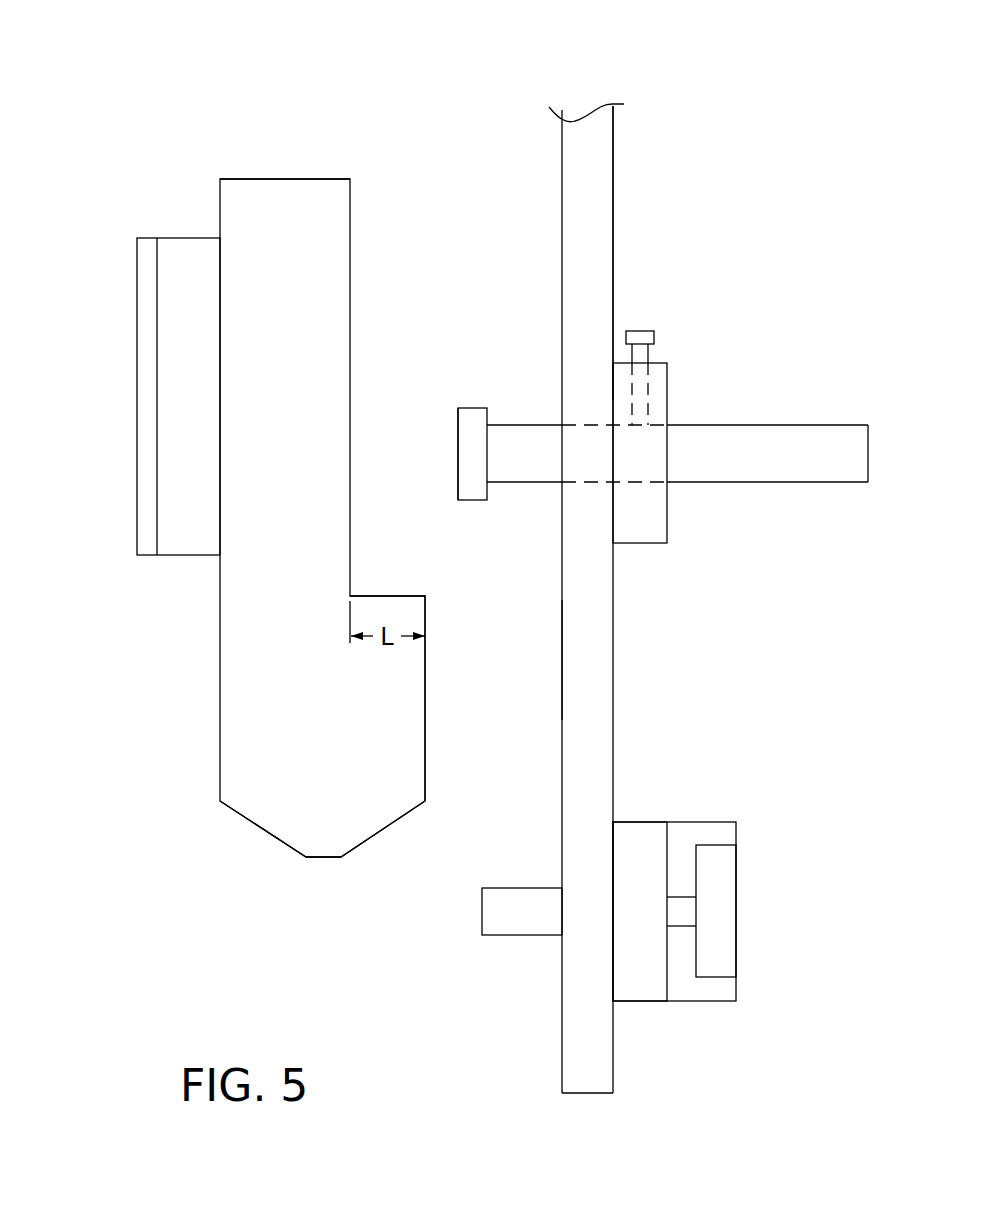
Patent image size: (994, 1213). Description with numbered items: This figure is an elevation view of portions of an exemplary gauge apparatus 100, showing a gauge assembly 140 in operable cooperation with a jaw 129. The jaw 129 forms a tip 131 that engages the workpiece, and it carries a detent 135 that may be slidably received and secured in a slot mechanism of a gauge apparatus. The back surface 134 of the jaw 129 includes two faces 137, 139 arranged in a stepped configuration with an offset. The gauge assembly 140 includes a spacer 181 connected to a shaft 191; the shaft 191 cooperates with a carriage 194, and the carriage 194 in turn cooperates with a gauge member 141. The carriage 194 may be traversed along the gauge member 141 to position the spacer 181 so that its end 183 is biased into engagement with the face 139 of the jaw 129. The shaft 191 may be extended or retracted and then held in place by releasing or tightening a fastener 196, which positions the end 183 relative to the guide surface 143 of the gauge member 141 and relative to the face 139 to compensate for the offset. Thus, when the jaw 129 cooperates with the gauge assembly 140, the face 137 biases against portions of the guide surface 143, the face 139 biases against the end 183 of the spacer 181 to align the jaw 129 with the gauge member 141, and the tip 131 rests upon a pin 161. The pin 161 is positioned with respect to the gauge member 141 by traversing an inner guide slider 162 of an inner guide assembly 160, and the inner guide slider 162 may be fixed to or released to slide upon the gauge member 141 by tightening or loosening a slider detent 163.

The gauge apparatus 100 is at (806, 52).
The jaw 129 is at (267, 798).
The tip 131 is at (327, 857).
The back surface 134 is at (350, 205).
The detent 135 is at (150, 495).
The face 137 is at (425, 704).
The face 139 is at (350, 277).
The gauge assembly 140 is at (605, 624).
The gauge member 141 is at (600, 167).
The guide surface 143 is at (562, 658).
The inner guide assembly 160 is at (653, 986).
The pin 161 is at (523, 922).
The inner guide slider 162 is at (640, 828).
The slider detent 163 is at (724, 900).
The spacer 181 is at (473, 418).
The end 183 is at (458, 462).
The shaft 191 is at (832, 442).
The carriage 194 is at (655, 373).
The fastener 196 is at (637, 333).